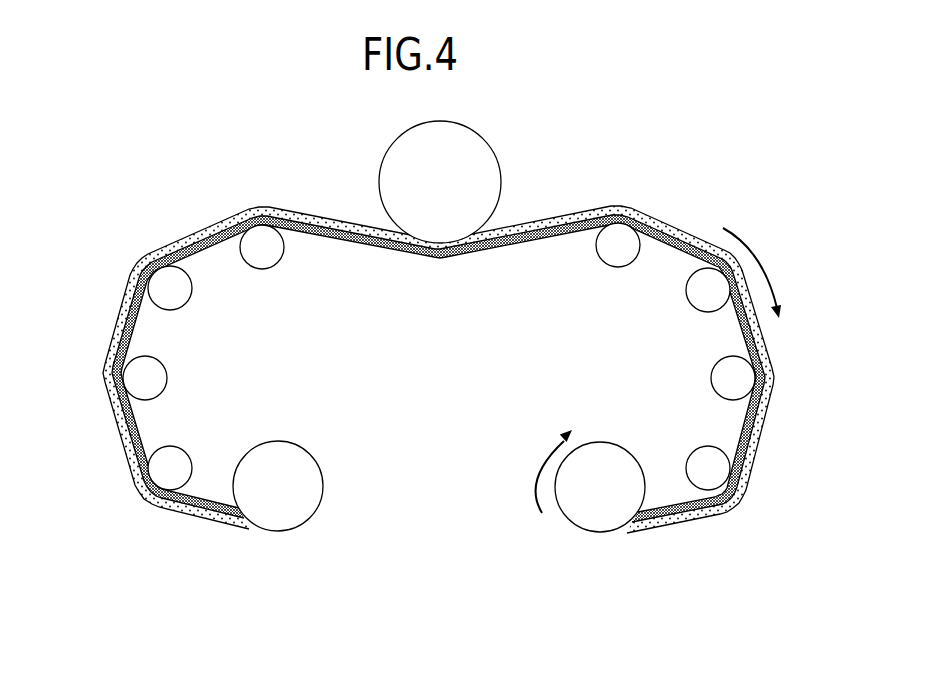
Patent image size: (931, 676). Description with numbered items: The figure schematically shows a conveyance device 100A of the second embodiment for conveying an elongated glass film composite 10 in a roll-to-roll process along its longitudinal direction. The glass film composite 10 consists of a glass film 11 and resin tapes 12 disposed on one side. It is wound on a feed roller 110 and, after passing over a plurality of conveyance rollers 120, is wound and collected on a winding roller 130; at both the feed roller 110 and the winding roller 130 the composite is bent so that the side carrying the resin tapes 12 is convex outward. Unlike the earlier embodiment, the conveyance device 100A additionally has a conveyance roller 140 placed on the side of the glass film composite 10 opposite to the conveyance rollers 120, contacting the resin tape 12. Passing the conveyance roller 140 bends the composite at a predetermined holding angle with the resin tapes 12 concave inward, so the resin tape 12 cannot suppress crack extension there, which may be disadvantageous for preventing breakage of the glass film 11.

The conveyance device 100A is at (97, 151).
The glass film composite 10 is at (438, 417).
The glass film 11 is at (180, 502).
The resin tape 12 is at (218, 517).
The feed roller 110 is at (278, 512).
The conveyance rollers 120 is at (167, 285).
The winding roller 130 is at (600, 510).
The conveyance roller 140 is at (492, 172).